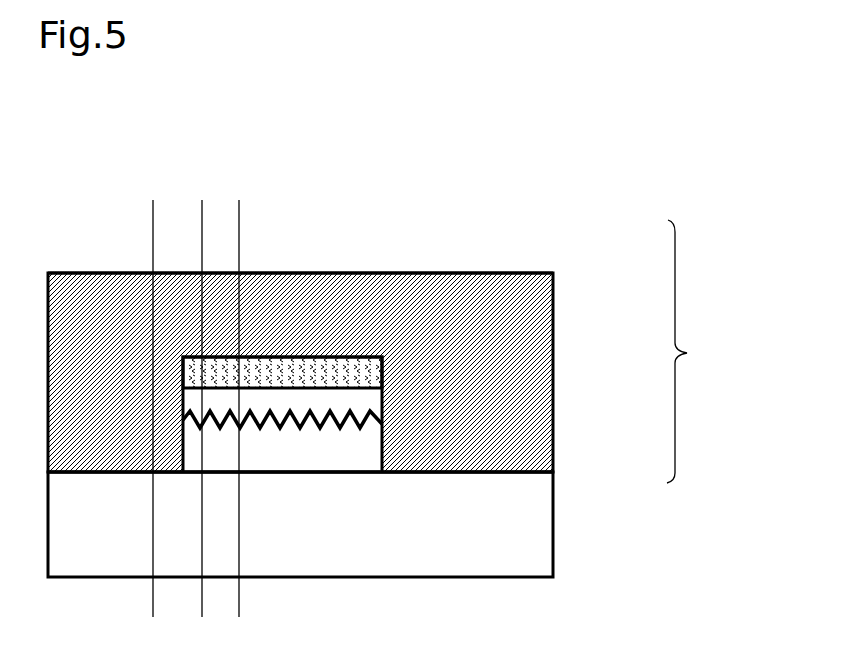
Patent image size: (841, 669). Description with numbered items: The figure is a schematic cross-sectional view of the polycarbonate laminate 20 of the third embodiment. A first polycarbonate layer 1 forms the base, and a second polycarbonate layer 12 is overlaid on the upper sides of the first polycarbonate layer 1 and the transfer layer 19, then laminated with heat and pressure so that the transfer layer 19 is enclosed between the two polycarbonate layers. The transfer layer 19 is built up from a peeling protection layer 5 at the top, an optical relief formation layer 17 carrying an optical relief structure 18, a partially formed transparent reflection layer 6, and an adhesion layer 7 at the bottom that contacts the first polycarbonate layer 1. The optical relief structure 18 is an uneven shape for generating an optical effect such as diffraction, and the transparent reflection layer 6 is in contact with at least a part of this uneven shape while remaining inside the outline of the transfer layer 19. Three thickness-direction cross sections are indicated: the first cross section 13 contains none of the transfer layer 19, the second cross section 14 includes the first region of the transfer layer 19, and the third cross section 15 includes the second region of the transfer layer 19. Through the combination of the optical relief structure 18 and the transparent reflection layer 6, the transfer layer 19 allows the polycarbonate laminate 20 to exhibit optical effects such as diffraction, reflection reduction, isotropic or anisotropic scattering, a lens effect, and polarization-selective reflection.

The first polycarbonate layer 1 is at (553, 538).
The peeling protection layer 5 is at (543, 273).
The transparent reflection layer 6 is at (362, 413).
The adhesion layer 7 is at (323, 427).
The second polycarbonate layer 12 is at (497, 273).
The first cross section 13 is at (146, 405).
The second cross section 14 is at (202, 405).
The third cross section 15 is at (250, 405).
The optical relief formation layer 17 is at (382, 361).
The optical relief structure 18 is at (382, 402).
The transfer layer 19 is at (708, 351).
The polycarbonate laminate 20 is at (300, 280).